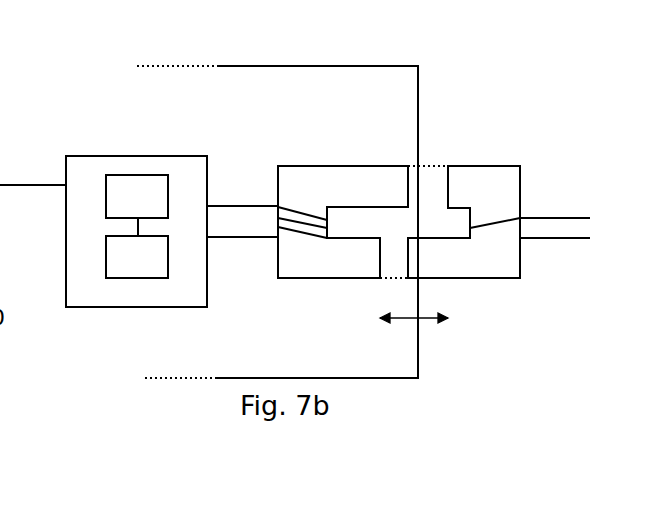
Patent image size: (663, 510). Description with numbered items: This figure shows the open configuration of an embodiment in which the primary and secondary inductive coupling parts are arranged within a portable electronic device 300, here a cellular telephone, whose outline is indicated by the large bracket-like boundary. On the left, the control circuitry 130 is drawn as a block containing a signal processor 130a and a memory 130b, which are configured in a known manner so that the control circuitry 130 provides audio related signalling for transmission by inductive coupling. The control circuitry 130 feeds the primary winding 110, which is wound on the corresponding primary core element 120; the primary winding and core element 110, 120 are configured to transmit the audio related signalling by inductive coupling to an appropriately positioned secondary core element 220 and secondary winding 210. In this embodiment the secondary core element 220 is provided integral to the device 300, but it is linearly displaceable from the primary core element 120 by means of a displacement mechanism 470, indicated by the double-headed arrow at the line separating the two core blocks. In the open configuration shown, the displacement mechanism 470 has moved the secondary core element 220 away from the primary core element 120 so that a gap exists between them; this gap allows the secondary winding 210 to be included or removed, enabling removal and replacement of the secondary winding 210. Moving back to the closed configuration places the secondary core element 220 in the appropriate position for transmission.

The portable electronic device 300 is at (278, 77).
The control circuitry 130 is at (172, 207).
The signal processor 130a is at (165, 214).
The memory 130b is at (165, 274).
The primary winding 110 is at (318, 207).
The primary core element 120 is at (308, 257).
The displacement mechanism 470 is at (419, 193).
The secondary winding 210 is at (494, 217).
The secondary core element 220 is at (483, 258).